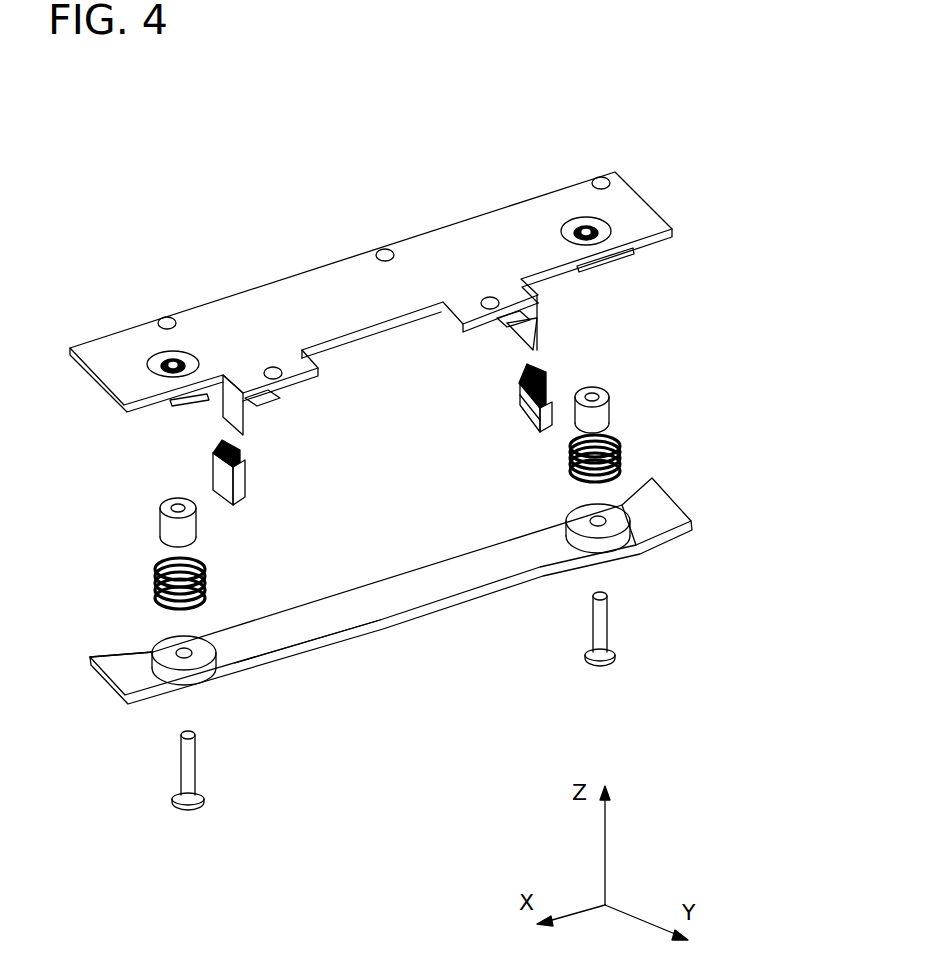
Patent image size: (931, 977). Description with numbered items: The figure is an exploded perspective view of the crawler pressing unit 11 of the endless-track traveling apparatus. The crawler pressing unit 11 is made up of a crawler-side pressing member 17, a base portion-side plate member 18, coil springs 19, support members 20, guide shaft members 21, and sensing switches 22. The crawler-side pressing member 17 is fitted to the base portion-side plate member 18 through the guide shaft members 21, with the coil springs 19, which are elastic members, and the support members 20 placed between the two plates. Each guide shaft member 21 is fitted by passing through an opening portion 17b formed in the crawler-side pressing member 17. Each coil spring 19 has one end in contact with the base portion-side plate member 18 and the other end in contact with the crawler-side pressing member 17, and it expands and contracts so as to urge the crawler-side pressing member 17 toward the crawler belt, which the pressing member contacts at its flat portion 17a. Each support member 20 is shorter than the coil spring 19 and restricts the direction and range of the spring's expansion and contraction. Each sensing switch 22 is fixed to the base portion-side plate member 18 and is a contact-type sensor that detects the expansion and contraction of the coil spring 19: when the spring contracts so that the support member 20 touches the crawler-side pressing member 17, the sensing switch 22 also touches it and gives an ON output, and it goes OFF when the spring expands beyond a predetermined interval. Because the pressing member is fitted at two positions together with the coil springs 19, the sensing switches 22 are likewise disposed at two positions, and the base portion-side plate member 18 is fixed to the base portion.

The crawler pressing unit 11 is at (558, 138).
The crawler-side pressing member 17 is at (677, 504).
The flat portion 17a is at (387, 640).
The opening portion 17b is at (182, 652).
The base portion-side plate member 18 is at (640, 200).
The coil spring 19 is at (623, 457).
The support member 20 is at (612, 411).
The guide shaft member 21 is at (611, 622).
The sensing switch 22 is at (557, 390).